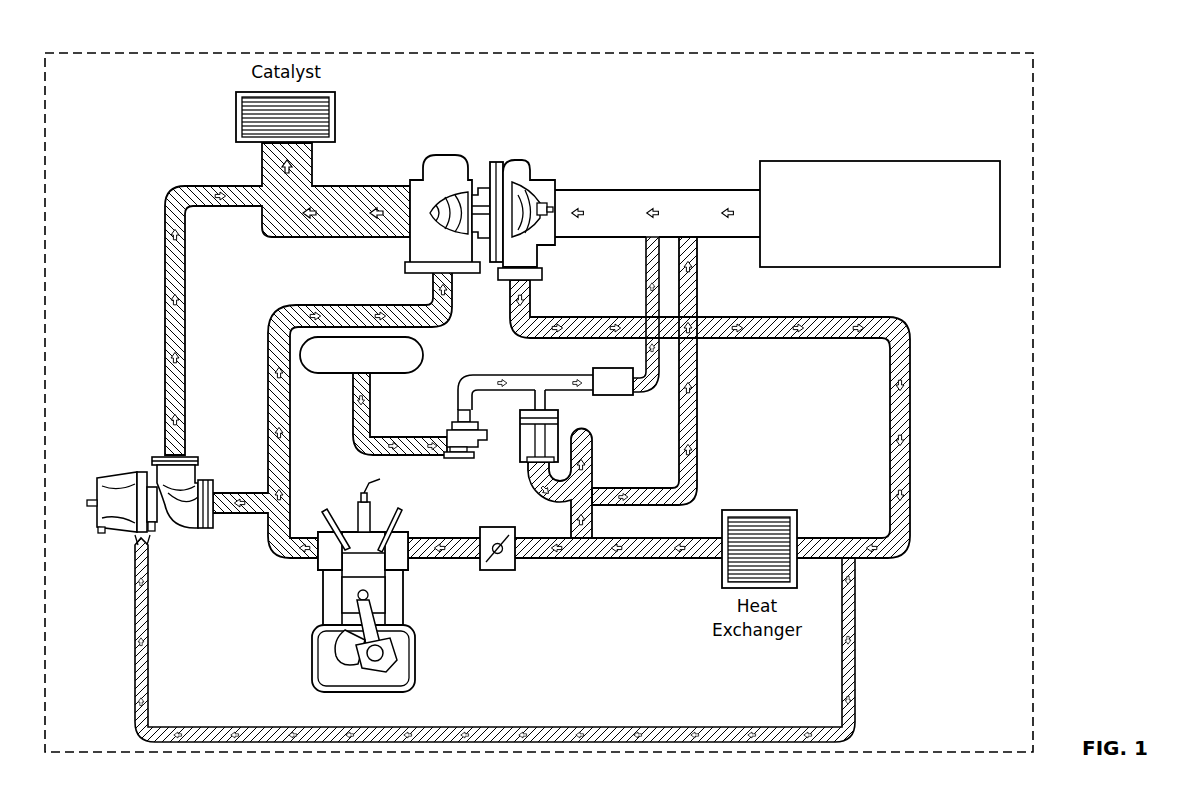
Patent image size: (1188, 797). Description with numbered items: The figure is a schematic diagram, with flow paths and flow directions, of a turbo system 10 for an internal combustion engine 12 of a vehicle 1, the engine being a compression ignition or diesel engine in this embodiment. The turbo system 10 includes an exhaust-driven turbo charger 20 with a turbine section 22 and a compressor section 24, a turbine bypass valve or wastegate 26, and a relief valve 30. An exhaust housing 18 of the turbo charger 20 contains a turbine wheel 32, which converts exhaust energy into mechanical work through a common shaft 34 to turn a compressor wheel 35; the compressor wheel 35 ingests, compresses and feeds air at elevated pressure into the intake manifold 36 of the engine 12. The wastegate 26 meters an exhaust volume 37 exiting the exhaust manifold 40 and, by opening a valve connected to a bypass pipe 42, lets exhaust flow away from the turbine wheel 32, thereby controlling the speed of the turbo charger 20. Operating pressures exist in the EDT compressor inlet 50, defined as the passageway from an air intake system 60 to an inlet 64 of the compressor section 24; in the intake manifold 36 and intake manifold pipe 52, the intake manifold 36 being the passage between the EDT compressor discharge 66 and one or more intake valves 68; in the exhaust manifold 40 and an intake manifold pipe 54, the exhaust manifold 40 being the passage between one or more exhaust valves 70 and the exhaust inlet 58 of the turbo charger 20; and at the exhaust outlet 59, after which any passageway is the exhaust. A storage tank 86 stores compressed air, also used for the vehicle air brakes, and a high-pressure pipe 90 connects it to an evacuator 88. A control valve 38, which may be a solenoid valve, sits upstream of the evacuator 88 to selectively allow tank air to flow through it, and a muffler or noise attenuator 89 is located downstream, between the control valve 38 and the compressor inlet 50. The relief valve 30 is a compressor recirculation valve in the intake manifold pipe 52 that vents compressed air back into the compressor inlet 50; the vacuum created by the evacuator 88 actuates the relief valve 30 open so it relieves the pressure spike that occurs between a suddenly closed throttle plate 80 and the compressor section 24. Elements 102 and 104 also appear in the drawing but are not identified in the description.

The vehicle 1 is at (1038, 116).
The turbo system 10 is at (1013, 79).
The internal combustion engine 12 is at (390, 594).
The exhaust housing 18 is at (492, 199).
The exhaust-driven turbo charger 20 is at (506, 150).
The turbine section 22 is at (437, 168).
The compressor section 24 is at (541, 186).
The wastegate 26 is at (118, 475).
The relief valve 30 is at (559, 414).
The turbine wheel 32 is at (415, 245).
The common shaft 34 is at (482, 215).
The compressor wheel 35 is at (547, 240).
The intake manifold 36 is at (408, 562).
The exhaust volume 37 is at (332, 431).
The control valve 38 is at (458, 420).
The exhaust manifold 40 is at (317, 562).
The bypass pipe 42 is at (187, 340).
The EDT compressor inlet 50 is at (590, 171).
The intake manifold pipe 52 is at (913, 403).
The intake manifold pipe 54 is at (426, 538).
The exhaust inlet 58 is at (418, 276).
The exhaust outlet 59 is at (288, 299).
The air intake system 60 is at (960, 162).
The inlet 64 is at (557, 225).
The EDT compressor discharge 66 is at (686, 416).
The intake valves 68 is at (404, 568).
The exhaust valves 70 is at (345, 530).
The throttle plate 80 is at (498, 527).
The storage tank 86 is at (424, 348).
The evacuator 88 is at (540, 376).
The noise attenuator 89 is at (614, 367).
The high-pressure pipe 90 is at (388, 453).
The air injection pipe 102 is at (589, 387).
The air injection nozzle 104 is at (524, 475).